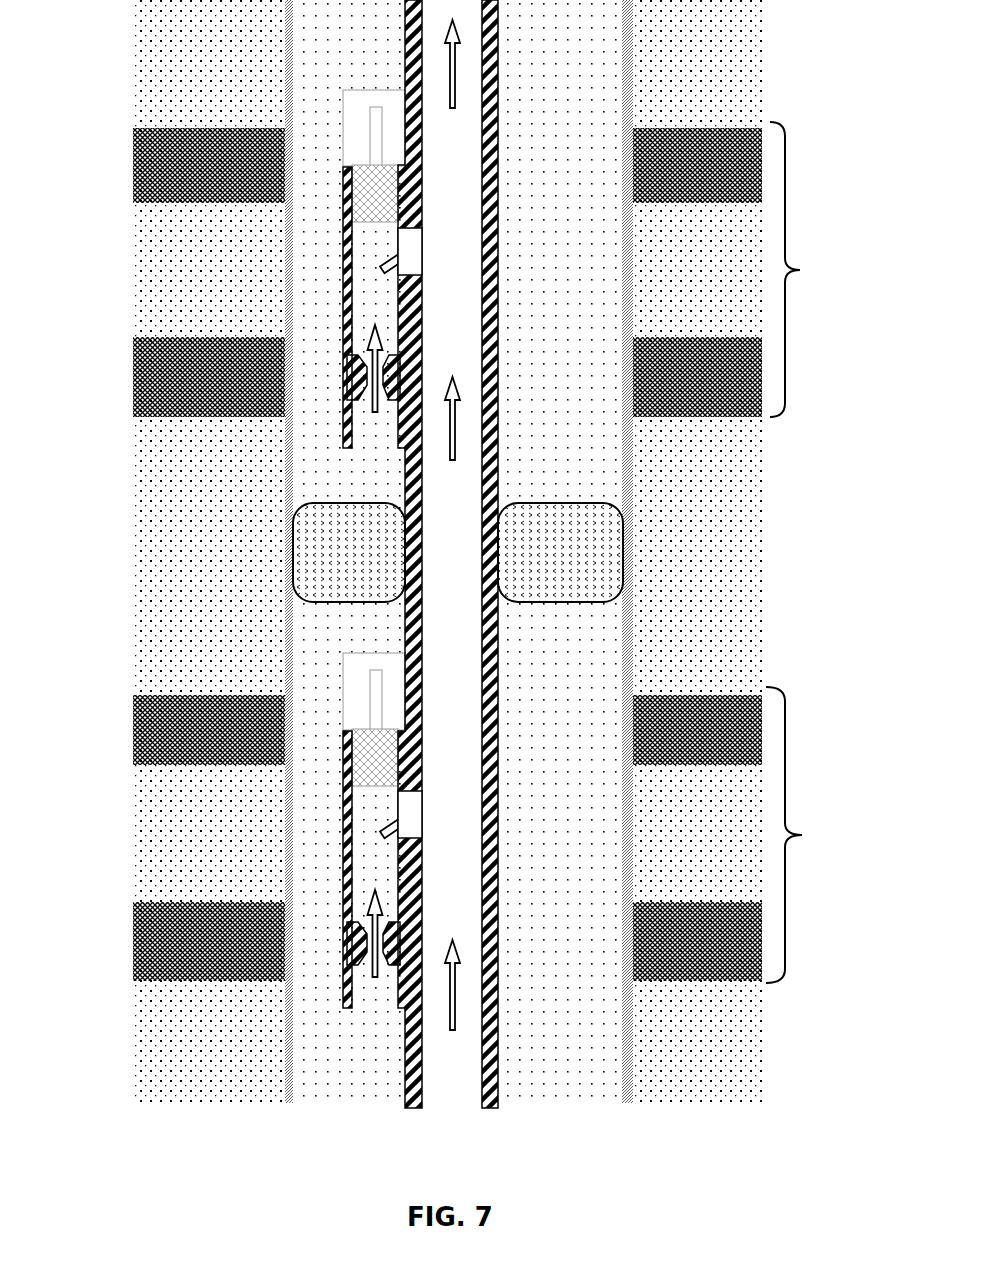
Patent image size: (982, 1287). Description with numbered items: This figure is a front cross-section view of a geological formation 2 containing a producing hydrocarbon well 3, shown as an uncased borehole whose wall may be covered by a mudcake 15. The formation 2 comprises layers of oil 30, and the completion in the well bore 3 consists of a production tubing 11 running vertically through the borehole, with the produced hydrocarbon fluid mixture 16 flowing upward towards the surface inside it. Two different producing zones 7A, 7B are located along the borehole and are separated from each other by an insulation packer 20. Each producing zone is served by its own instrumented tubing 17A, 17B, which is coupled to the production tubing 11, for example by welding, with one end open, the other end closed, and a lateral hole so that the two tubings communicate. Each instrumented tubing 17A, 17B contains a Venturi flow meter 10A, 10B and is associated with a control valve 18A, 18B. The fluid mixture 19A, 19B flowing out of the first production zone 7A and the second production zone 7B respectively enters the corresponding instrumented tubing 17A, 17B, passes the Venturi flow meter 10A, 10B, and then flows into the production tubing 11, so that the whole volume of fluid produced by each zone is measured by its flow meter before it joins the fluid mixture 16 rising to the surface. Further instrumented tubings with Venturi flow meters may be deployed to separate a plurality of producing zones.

The geological formation 2 is at (193, 1089).
The well bore 3 is at (589, 1072).
The first production zone 7A is at (801, 835).
The second production zone 7B is at (803, 269).
The Venturi flow meter 10A is at (352, 936).
The Venturi flow meter 10B is at (355, 382).
The production tubing 11 is at (497, 73).
The mudcake 15 is at (289, 1097).
The produced hydrocarbon fluid mixture 16 is at (455, 444).
The instrumented tubing 17A is at (343, 800).
The instrumented tubing 17B is at (343, 247).
The control valve 18A is at (374, 708).
The control valve 18B is at (377, 146).
The fluid mixture 19A is at (375, 977).
The fluid mixture 19B is at (375, 412).
The insulation packer 20 is at (590, 540).
The layer of oil 30 is at (148, 162).